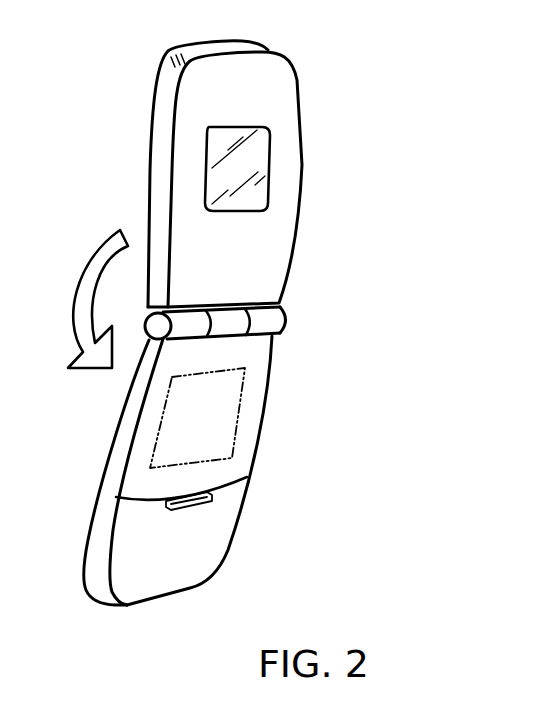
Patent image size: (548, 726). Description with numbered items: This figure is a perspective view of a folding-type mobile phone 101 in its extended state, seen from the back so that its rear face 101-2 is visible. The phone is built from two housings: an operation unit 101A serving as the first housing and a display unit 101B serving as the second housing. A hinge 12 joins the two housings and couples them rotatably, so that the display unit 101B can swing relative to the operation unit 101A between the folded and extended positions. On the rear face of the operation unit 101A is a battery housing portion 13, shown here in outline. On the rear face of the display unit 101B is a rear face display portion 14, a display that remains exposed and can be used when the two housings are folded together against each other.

The mobile phone 101 is at (263, 313).
The rear face 101-2 is at (303, 174).
The operation unit 101A is at (228, 470).
The display unit 101B is at (293, 248).
The hinge 12 is at (288, 314).
The battery housing portion 13 is at (238, 413).
The rear face display portion 14 is at (257, 158).